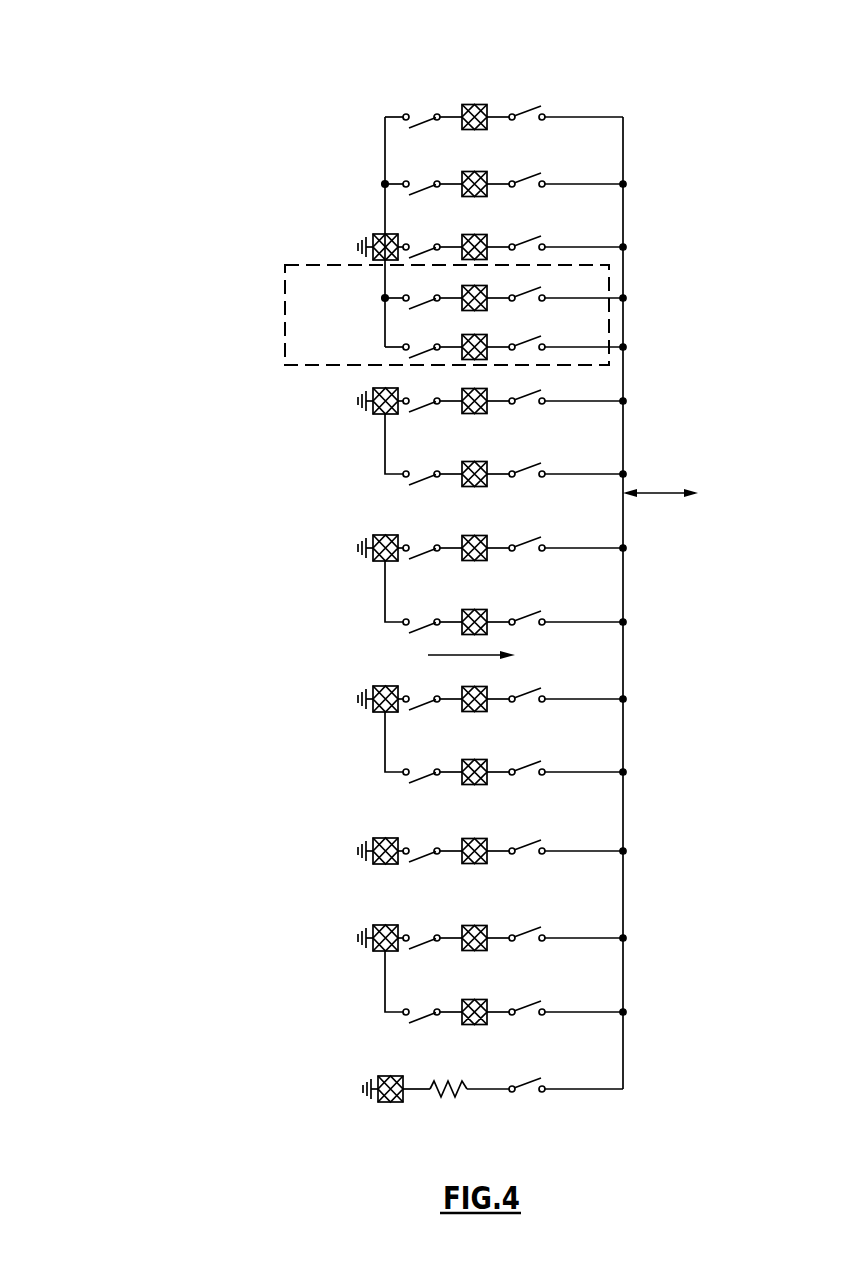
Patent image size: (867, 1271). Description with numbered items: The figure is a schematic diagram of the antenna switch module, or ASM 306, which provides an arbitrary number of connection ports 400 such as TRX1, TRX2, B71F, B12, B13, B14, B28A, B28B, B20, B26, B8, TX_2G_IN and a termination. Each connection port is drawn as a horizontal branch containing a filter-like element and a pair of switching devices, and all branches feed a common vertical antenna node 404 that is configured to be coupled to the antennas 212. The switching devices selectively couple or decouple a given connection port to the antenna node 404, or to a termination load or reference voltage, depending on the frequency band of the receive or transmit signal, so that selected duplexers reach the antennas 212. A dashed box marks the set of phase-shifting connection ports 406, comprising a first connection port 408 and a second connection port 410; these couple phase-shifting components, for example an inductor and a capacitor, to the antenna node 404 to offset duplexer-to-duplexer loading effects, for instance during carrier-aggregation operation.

The antenna switch module 306 is at (150, 143).
The connection ports 400 is at (467, 68).
The antenna node 404 is at (624, 432).
The set of phase-shifting connection ports 406 is at (285, 306).
The first connection port 408 is at (456, 313).
The second connection port 410 is at (556, 327).
The antennas 212 is at (680, 496).